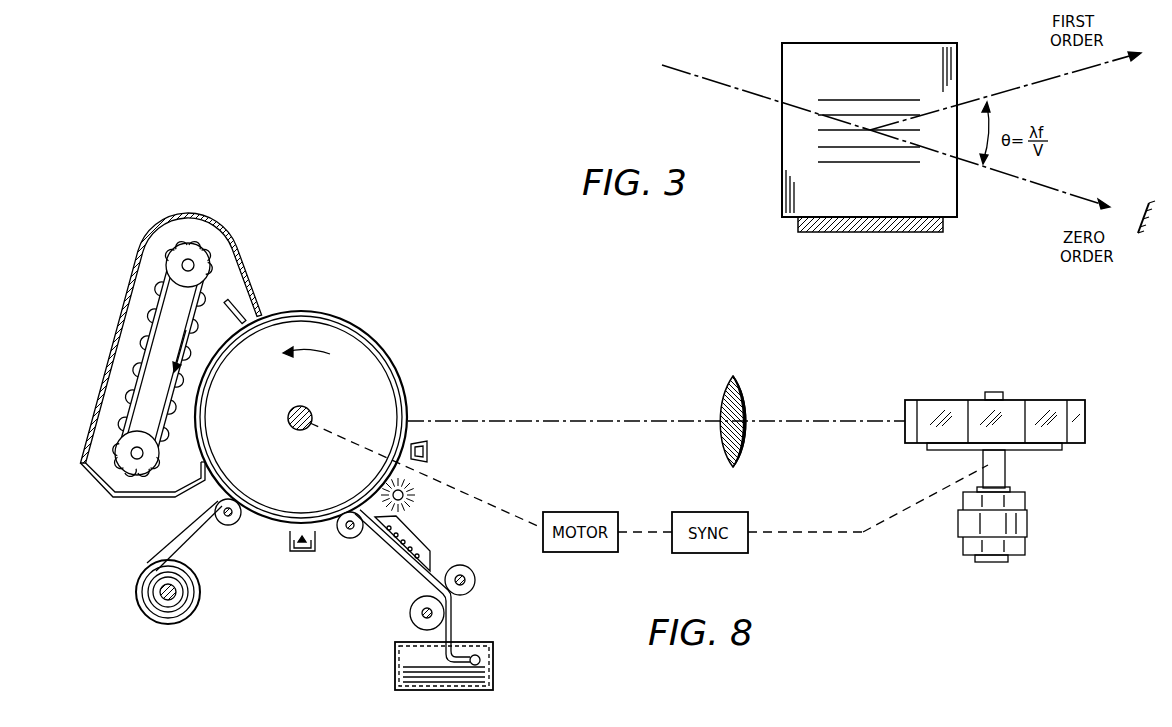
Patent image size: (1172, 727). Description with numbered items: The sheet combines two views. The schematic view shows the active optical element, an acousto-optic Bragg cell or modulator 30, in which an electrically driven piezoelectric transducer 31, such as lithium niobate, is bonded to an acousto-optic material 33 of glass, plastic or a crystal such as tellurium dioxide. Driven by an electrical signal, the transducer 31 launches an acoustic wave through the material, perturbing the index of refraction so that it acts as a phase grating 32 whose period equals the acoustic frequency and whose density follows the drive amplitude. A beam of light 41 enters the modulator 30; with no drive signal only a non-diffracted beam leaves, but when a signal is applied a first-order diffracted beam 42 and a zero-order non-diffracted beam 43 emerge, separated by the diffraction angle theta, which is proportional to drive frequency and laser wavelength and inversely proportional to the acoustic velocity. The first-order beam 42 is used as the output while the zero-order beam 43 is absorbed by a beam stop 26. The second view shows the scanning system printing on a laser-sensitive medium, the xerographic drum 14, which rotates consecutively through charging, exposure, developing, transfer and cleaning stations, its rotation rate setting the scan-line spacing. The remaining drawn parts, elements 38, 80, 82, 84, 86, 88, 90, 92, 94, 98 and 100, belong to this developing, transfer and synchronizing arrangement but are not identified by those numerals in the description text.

In FIG. 8, the xerographic drum 14 is at (362, 335).
In FIG. 3, the beam stop 26 is at (1139, 200).
In FIG. 3, the acousto-optic modulator 30 is at (849, 131).
In FIG. 3, the piezoelectric transducer 31 is at (807, 233).
In FIG. 3, the phase grating 32 is at (848, 166).
In FIG. 3, the acousto-optic material 33 is at (783, 60).
In FIG. 8, the color filter wheel 38 is at (1068, 384).
In FIG. 3, the beam of light 41 is at (707, 85).
In FIG. 3, the first-order diffracted beam 42 is at (1013, 88).
In FIG. 8, the first-order diffracted beam 42 is at (752, 403).
In FIG. 3, the zero-order non-diffracted beam 43 is at (1017, 182).
In FIG. 8, the sensor 80 is at (429, 444).
In FIG. 8, the exposure point 82 is at (410, 418).
In FIG. 8, the toner conveyor 84 is at (250, 278).
In FIG. 8, the cleaning station 86 is at (300, 552).
In FIG. 8, the web supply roll 88 is at (202, 589).
In FIG. 8, the pinch rollers 90 is at (227, 526).
In FIG. 8, the guide rollers and plate 92 is at (424, 548).
In FIG. 8, the fixing tank 94 is at (494, 663).
In FIG. 8, the lamp 98 is at (418, 503).
In FIG. 8, the motor 100 is at (1027, 522).